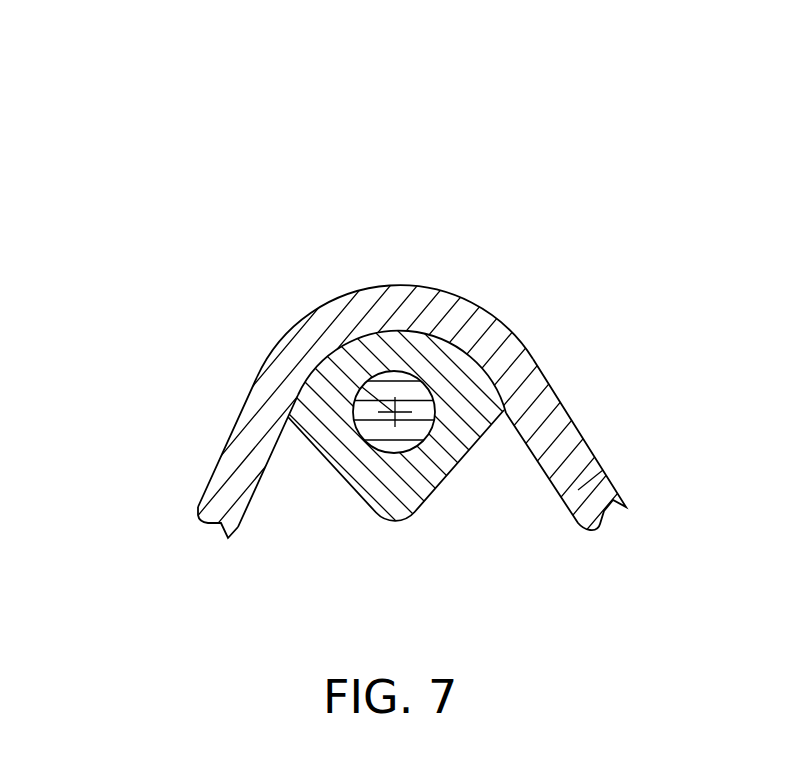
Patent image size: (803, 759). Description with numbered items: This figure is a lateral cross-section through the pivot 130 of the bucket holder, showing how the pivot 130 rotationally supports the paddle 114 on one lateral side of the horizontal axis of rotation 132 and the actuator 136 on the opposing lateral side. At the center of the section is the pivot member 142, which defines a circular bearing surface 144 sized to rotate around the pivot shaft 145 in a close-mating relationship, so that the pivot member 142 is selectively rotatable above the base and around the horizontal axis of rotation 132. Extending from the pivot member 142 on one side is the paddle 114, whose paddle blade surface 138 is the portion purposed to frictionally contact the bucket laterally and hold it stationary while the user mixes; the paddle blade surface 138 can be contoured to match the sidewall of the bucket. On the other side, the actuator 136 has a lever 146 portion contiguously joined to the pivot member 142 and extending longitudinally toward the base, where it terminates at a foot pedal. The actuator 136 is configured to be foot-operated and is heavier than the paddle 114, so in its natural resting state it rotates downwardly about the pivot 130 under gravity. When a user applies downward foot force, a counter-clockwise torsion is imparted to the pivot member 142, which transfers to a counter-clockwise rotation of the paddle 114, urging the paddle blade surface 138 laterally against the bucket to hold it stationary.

The pivot 130 is at (389, 212).
The horizontal axis of rotation 132 is at (345, 353).
The paddle blade surface 138 is at (497, 323).
The lever 146 is at (262, 382).
The actuator 136 is at (180, 488).
The paddle 114 is at (593, 463).
The pivot member 142 is at (443, 457).
The circular bearing surface 144 is at (413, 383).
The pivot shaft 145 is at (403, 433).